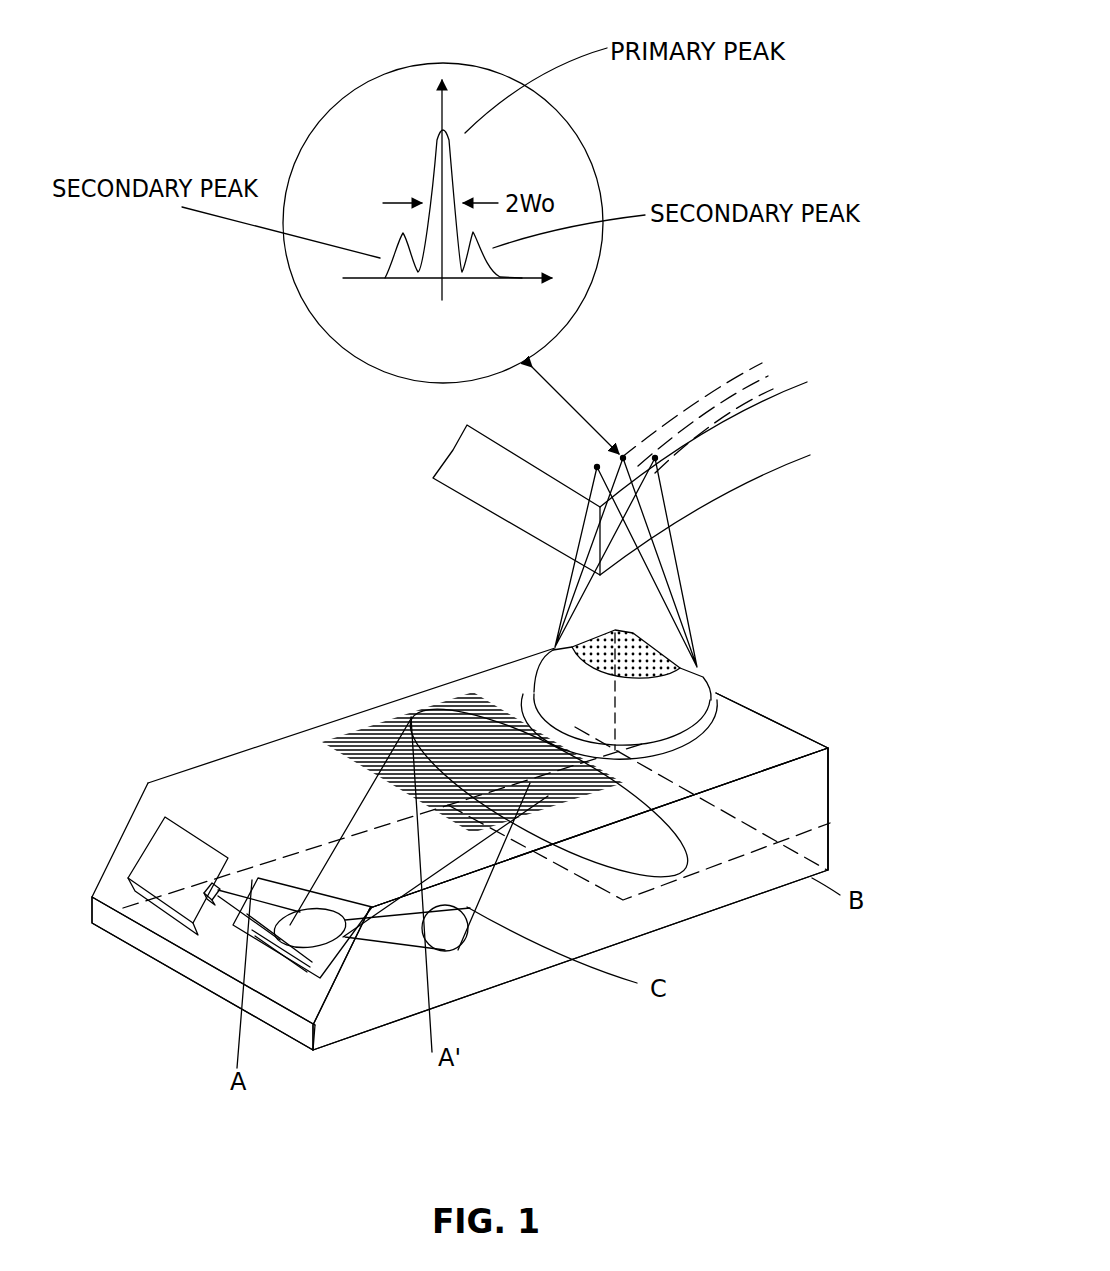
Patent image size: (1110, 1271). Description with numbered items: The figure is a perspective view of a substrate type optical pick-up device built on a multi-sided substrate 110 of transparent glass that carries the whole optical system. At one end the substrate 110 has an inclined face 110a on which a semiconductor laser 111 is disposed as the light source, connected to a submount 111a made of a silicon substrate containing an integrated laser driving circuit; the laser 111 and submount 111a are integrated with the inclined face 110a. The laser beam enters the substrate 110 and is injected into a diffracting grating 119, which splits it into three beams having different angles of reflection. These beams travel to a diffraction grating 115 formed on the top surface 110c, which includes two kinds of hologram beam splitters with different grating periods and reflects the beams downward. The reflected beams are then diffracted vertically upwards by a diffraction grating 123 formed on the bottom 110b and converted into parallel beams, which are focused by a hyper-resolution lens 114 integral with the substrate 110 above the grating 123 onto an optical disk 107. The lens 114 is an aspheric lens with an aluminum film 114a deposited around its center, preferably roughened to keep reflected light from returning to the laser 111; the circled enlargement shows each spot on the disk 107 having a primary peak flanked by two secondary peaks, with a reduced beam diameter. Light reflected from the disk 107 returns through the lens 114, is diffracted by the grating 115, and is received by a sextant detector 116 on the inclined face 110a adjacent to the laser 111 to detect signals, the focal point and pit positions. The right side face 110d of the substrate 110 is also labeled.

The optical disk 107 is at (653, 528).
The substrate 110 is at (497, 967).
The inclined face 110a is at (195, 932).
The bottom 110b is at (747, 900).
The top surface 110c is at (775, 752).
The base right face 110d is at (810, 789).
The semiconductor laser 111 is at (215, 884).
The submount 111a is at (162, 858).
The hyper-resolution lens 114 is at (687, 708).
The aluminum film 114a is at (662, 647).
The diffraction grating 115 is at (372, 722).
The sextant detector 116 is at (263, 933).
The diffracting grating 119 is at (338, 942).
The diffraction grating 123 is at (673, 877).